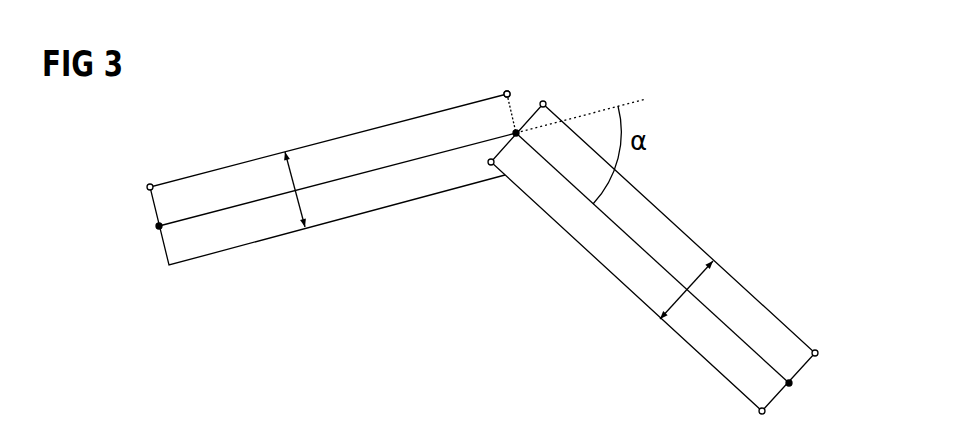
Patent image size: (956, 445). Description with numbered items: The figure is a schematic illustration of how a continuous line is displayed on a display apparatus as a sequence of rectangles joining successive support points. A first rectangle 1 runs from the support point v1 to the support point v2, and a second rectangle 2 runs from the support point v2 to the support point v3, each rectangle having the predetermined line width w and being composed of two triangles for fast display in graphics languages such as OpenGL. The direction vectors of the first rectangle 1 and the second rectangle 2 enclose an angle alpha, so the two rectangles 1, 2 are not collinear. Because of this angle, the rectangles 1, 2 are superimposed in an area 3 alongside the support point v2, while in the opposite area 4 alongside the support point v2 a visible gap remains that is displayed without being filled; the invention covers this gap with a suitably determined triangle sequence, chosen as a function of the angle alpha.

The first rectangle 1 is at (349, 192).
The second rectangle 2 is at (586, 224).
The superimposition area 3 is at (508, 167).
The opposite area 4 is at (521, 101).
The support point v1 is at (137, 238).
The support point v2 is at (494, 129).
The support point v3 is at (796, 401).